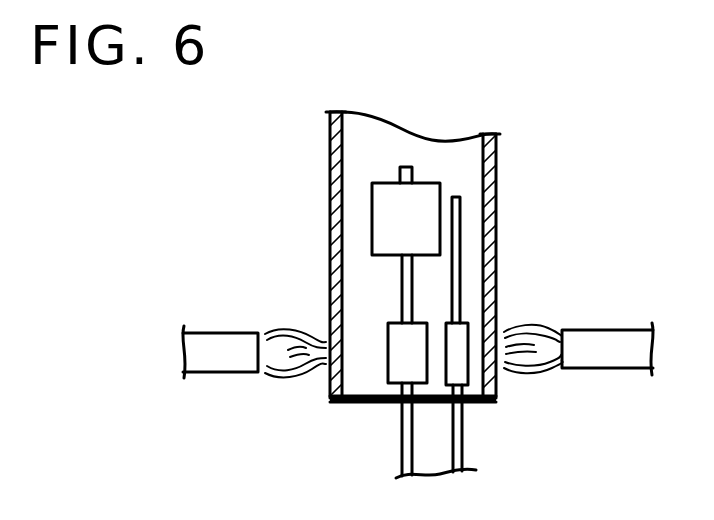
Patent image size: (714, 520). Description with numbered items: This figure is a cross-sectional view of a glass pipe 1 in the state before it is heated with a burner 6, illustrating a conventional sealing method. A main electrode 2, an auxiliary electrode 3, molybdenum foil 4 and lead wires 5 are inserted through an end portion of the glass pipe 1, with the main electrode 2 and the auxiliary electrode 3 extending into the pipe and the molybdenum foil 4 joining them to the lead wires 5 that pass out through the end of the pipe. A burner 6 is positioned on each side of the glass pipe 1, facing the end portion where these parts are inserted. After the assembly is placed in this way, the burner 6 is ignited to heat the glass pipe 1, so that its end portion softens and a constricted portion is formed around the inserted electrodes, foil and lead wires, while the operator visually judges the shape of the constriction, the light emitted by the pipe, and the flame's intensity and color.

The glass pipe 1 is at (497, 140).
The main electrode 2 is at (378, 218).
The auxiliary electrode 3 is at (460, 210).
The molybdenum foil 4 is at (390, 334).
The lead wires 5 is at (400, 287).
The burner 6 is at (212, 360).